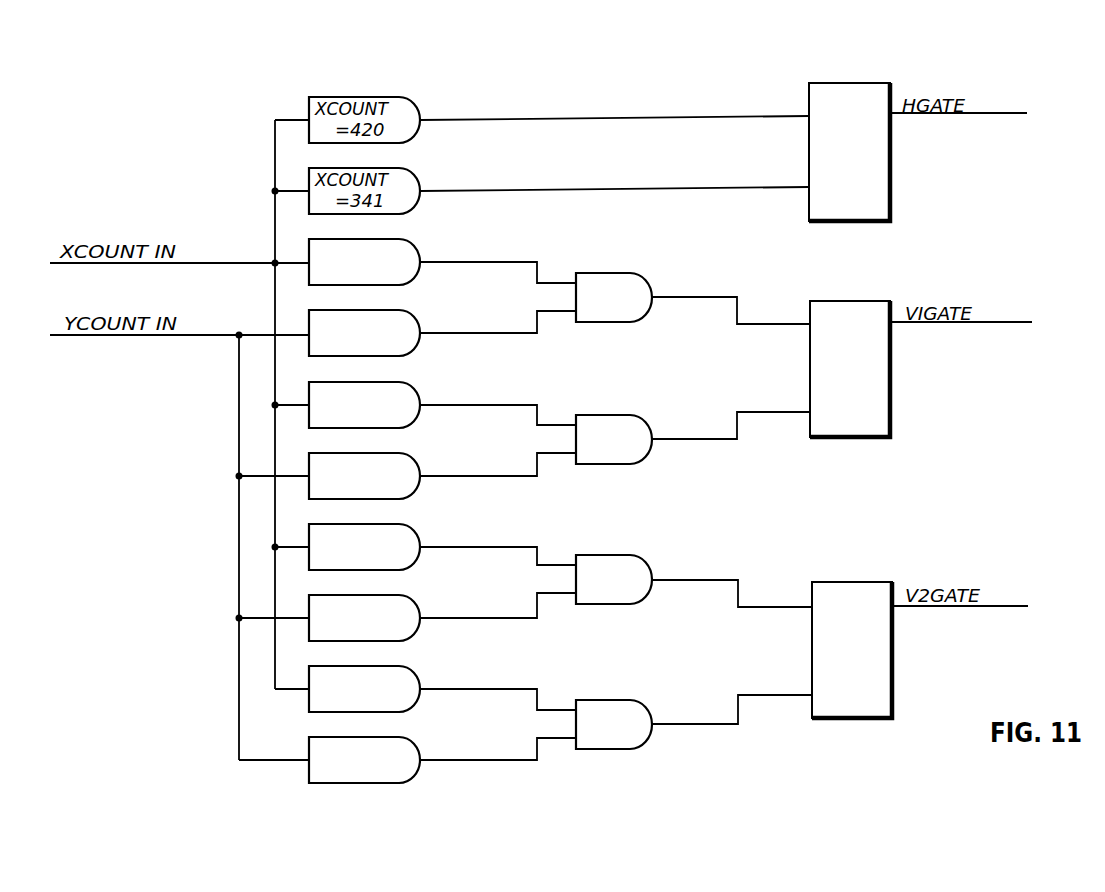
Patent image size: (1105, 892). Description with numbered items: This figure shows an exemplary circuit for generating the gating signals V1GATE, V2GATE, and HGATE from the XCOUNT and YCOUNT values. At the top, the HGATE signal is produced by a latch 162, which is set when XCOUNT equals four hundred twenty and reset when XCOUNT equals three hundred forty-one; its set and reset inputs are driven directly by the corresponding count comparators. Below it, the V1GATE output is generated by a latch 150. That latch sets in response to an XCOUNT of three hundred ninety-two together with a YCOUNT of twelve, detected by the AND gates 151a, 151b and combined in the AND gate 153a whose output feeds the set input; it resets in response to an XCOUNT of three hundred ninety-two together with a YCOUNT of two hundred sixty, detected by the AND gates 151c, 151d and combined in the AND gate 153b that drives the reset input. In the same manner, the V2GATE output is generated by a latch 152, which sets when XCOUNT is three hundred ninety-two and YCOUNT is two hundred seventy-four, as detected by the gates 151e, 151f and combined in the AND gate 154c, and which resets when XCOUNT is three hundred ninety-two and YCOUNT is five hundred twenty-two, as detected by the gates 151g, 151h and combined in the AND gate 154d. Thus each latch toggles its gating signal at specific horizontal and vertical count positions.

The latch 150 is at (877, 300).
The latch 152 is at (875, 581).
The latch 162 is at (878, 83).
The AND gate 151a is at (404, 240).
The AND gate 151b is at (404, 311).
The AND gate 151c is at (404, 383).
The AND gate 151d is at (404, 454).
The gate 151e is at (404, 525).
The gate 151f is at (404, 596).
The gate 151g is at (404, 667).
The gate 151h is at (404, 738).
The AND gate 153a is at (636, 273).
The AND gate 153b is at (636, 415).
The AND gate 154c is at (636, 555).
The AND gate 154d is at (636, 700).